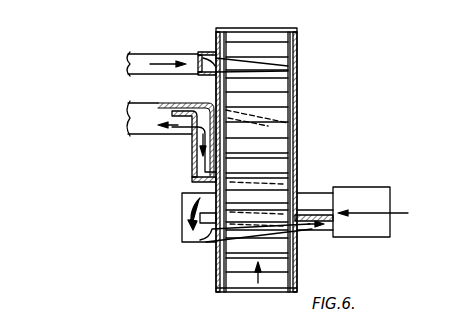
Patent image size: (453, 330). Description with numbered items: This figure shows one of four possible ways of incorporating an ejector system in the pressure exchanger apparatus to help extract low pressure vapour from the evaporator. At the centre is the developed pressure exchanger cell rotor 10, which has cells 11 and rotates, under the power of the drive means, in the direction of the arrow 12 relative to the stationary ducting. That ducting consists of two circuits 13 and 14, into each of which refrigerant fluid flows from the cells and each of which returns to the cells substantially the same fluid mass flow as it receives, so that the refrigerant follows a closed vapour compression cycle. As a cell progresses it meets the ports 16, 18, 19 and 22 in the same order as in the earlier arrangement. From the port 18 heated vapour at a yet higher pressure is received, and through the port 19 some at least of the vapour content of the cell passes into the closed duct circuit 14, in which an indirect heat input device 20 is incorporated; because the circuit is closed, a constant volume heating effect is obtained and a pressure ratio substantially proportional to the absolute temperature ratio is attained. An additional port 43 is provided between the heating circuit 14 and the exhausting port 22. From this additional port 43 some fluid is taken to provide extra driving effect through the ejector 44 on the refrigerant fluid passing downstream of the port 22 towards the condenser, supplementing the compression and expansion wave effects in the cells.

The pressure exchanger cell rotor 10 is at (295, 131).
The cells 11 is at (276, 84).
The arrow 12 is at (258, 285).
The circuit 13 is at (146, 54).
The circuit 14 is at (182, 212).
The port 16 is at (209, 53).
The port 18 is at (206, 243).
The port 19 is at (302, 233).
The indirect heat input device 20 is at (369, 223).
The exhausting port 22 is at (209, 112).
The additional port 43 is at (193, 182).
The ejector 44 is at (158, 113).